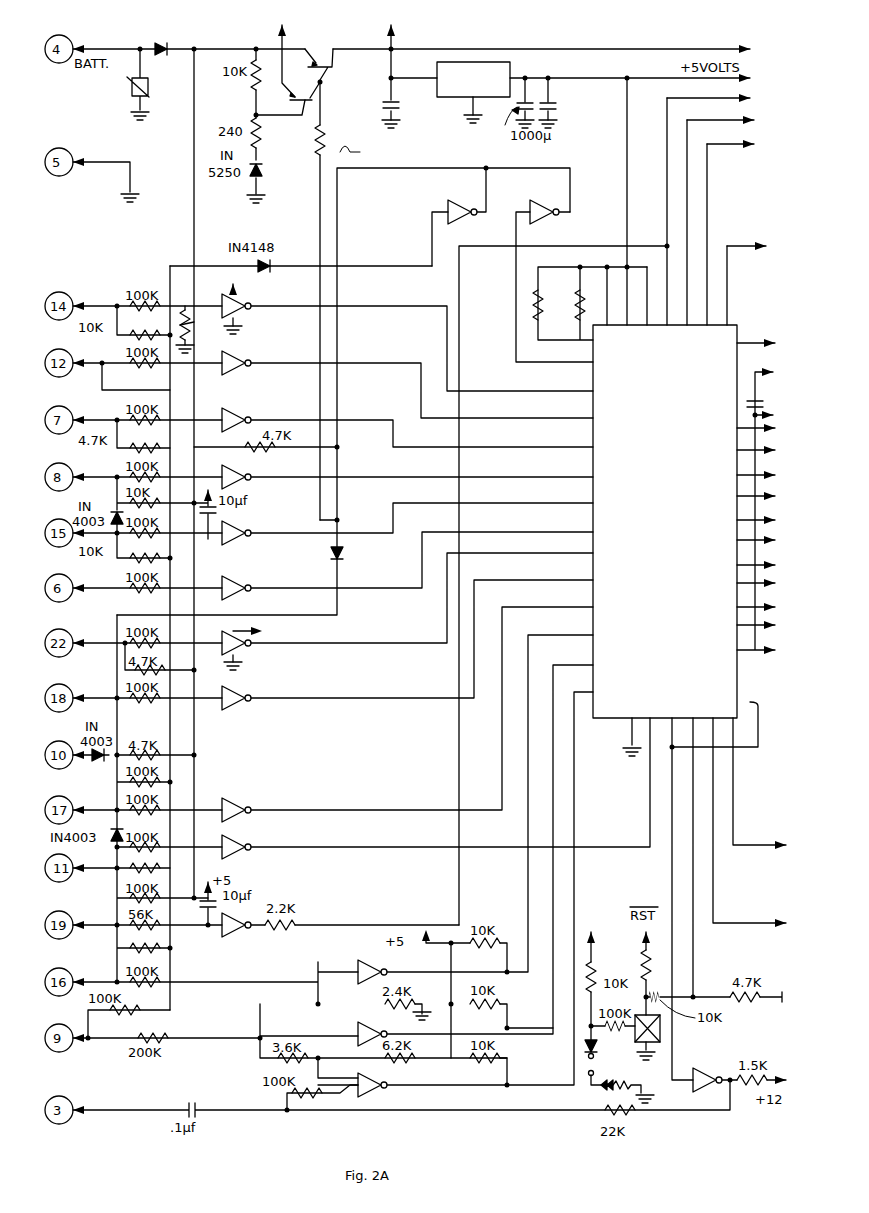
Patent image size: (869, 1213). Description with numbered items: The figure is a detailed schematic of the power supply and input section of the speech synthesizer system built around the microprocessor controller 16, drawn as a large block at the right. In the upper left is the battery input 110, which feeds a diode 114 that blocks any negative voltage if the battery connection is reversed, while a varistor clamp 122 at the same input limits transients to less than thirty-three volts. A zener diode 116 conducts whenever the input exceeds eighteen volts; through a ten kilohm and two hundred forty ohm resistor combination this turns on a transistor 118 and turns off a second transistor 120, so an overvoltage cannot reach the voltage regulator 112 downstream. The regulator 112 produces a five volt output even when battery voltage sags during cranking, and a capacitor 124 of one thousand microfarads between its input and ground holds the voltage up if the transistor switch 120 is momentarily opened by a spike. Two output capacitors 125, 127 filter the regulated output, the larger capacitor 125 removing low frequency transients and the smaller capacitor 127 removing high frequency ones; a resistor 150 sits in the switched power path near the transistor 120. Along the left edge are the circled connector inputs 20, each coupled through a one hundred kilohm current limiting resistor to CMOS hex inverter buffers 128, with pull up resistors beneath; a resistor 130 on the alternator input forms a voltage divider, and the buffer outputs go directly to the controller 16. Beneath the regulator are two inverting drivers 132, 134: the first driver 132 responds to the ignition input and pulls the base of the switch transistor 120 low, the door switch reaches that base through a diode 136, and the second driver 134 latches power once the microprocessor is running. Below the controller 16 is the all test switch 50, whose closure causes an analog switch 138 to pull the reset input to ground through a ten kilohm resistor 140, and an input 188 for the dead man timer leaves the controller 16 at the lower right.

The inputs 20 is at (53, 265).
The microprocessor controller 16 is at (670, 537).
The battery input 110 is at (113, 48).
The voltage regulator 112 is at (482, 62).
The diode 114 is at (171, 54).
The zener diode 116 is at (262, 162).
The transistor 118 is at (328, 92).
The transistor switch 120 is at (327, 58).
The varistor clamp 122 is at (127, 86).
The capacitor 124 is at (387, 107).
The output capacitor 125 is at (525, 102).
The output capacitor 127 is at (565, 86).
The hex inverter buffers 128 is at (238, 302).
The resistor 130 is at (192, 327).
The inverting driver 132 is at (448, 194).
The inverting driver 134 is at (541, 206).
The diode 136 is at (344, 555).
The analog switch 138 is at (660, 1032).
The resistor 140 is at (659, 960).
The oscillator circuit 150 is at (334, 301).
The input 188 is at (758, 740).
The all test switch 50 is at (602, 1071).